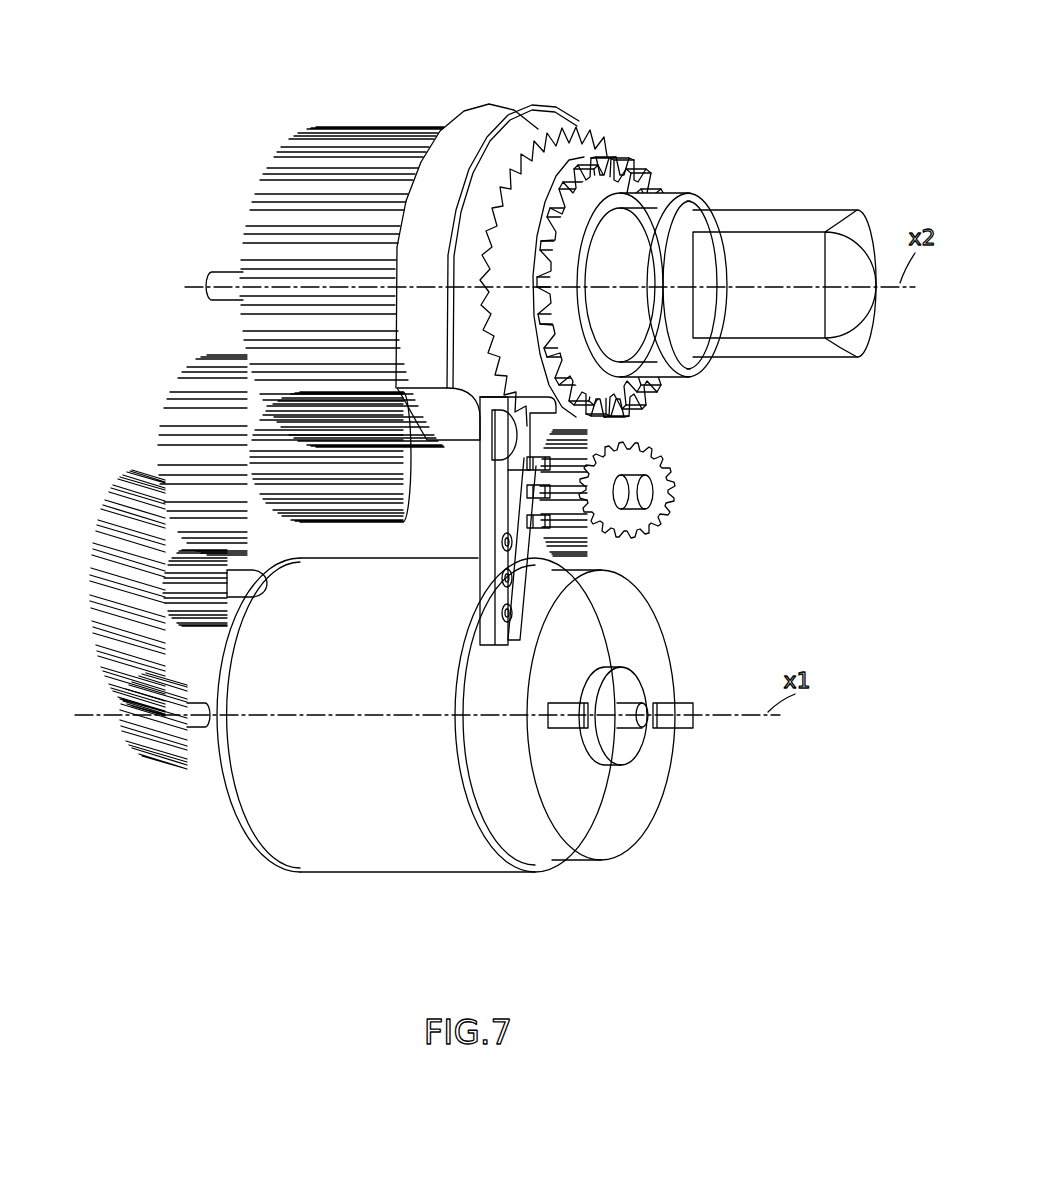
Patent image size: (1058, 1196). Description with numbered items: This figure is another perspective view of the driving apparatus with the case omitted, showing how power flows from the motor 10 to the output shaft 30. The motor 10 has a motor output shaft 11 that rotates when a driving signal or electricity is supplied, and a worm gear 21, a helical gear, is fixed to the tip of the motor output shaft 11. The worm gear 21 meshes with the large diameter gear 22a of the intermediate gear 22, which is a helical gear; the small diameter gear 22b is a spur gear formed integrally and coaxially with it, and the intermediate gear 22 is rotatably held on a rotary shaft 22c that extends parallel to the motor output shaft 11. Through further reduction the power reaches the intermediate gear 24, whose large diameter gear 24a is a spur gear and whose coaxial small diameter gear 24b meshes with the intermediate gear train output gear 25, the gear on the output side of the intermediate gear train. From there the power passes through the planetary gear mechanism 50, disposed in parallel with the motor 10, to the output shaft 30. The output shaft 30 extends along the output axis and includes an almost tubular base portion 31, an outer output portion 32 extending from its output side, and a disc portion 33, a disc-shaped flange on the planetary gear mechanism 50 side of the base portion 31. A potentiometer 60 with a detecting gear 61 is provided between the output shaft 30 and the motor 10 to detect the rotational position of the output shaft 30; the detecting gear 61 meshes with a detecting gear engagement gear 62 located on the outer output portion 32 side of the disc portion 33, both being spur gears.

The motor 10 is at (416, 893).
The motor output shaft 11 is at (200, 730).
The worm gear 21 is at (127, 740).
The intermediate gear 22 is at (180, 593).
The large diameter gear 22a is at (100, 612).
The small diameter gear 22b is at (205, 605).
The rotary shaft 22c is at (243, 580).
The intermediate gear 24 is at (261, 440).
The large diameter gear 24a is at (188, 390).
The small diameter gear 24b is at (343, 513).
The intermediate gear train output gear 25 is at (357, 116).
The output shaft 30 is at (774, 265).
The base portion 31 is at (668, 350).
The outer output portion 32 is at (790, 348).
The disc portion 33 is at (553, 165).
The planetary gear mechanism 50 is at (511, 86).
The potentiometer 60 is at (470, 583).
The detecting gear 61 is at (633, 533).
The detecting gear engagement gear 62 is at (648, 192).